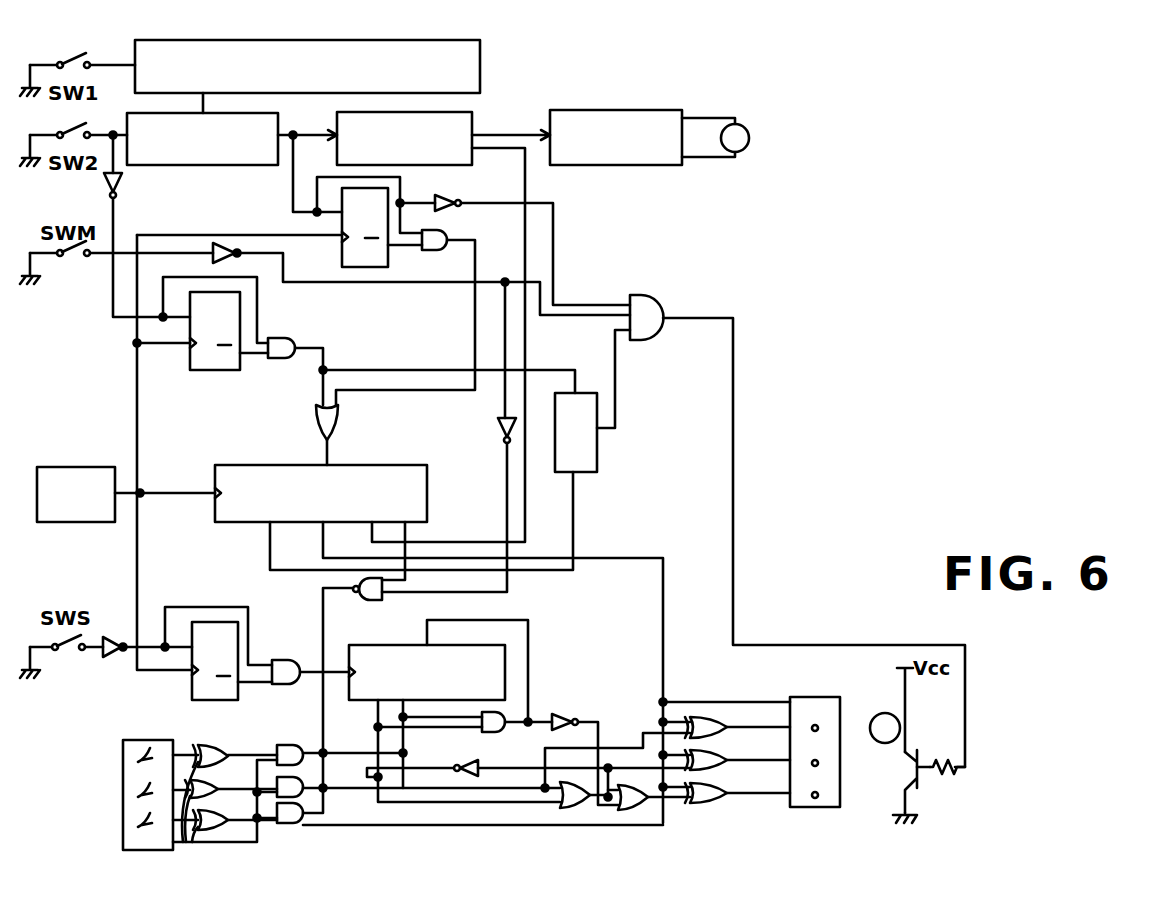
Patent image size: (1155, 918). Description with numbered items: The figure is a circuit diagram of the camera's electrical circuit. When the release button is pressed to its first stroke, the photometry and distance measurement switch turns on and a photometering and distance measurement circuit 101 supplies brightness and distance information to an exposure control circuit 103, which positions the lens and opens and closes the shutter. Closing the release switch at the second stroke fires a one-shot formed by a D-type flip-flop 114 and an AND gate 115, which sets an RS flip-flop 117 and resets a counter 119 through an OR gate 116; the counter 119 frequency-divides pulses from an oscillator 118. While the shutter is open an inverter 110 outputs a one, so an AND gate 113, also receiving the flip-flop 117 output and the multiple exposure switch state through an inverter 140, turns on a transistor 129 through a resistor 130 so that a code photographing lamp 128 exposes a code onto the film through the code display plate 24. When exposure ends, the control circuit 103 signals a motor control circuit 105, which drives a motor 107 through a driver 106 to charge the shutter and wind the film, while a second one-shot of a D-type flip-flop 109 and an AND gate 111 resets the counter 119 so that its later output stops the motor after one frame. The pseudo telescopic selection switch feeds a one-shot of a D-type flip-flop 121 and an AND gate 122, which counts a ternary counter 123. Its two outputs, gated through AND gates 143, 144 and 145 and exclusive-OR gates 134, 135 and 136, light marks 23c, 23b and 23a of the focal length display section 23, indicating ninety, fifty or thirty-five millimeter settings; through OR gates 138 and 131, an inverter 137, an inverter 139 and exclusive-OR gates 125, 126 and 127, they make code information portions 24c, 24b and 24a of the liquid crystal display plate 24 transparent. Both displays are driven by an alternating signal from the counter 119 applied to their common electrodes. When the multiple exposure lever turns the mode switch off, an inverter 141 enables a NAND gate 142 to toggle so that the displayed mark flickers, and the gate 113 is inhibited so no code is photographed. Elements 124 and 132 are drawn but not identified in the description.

The photometering and distance measurement circuit 101 is at (480, 50).
The exposure control circuit 103 is at (225, 165).
The motor control circuit 105 is at (462, 112).
The driver 106 is at (615, 108).
The motor 107 is at (750, 138).
The D-type flip-flop 109 is at (365, 267).
The inverter 110 is at (455, 195).
The AND gate 111 is at (447, 232).
The AND gate 113 is at (655, 300).
The D-type flip-flop 114 is at (212, 370).
The AND gate 115 is at (280, 358).
The OR gate 116 is at (338, 418).
The RS flip-flop 117 is at (597, 458).
The oscillator 118 is at (78, 467).
The counter 119 is at (427, 478).
The D-type flip-flop 121 is at (192, 695).
The AND gate 122 is at (290, 684).
The ternary counter 123 is at (400, 645).
The AND gate 124 is at (505, 712).
The exclusive-OR gate 125 is at (715, 717).
The exclusive-OR gate 126 is at (715, 750).
The exclusive-OR gate 127 is at (715, 783).
The code photographing lamp 128 is at (900, 728).
The transistor 129 is at (910, 795).
The resistor 130 is at (945, 775).
The OR gate 131 is at (635, 810).
The inverter 132 is at (122, 182).
The exclusive-OR gate 134 is at (205, 745).
The exclusive-OR gate 135 is at (108, 657).
The exclusive-OR gate 136 is at (222, 830).
The inverter 137 is at (565, 714).
The OR gate 138 is at (575, 808).
The inverter 139 is at (462, 762).
The inverter 140 is at (222, 243).
The inverter 141 is at (495, 428).
The NAND gate 142 is at (370, 600).
The AND gate 143 is at (285, 745).
The AND gate 144 is at (290, 797).
The AND gate 145 is at (300, 826).
The pseudo telescopic focal length display section 23 is at (123, 855).
The mark 23a is at (123, 823).
The mark 23b is at (123, 793).
The mark 23c is at (123, 758).
The liquid crystal code display plate 24 is at (844, 766).
The code information portion 24a is at (818, 795).
The code information portion 24b is at (818, 763).
The code information portion 24c is at (818, 725).